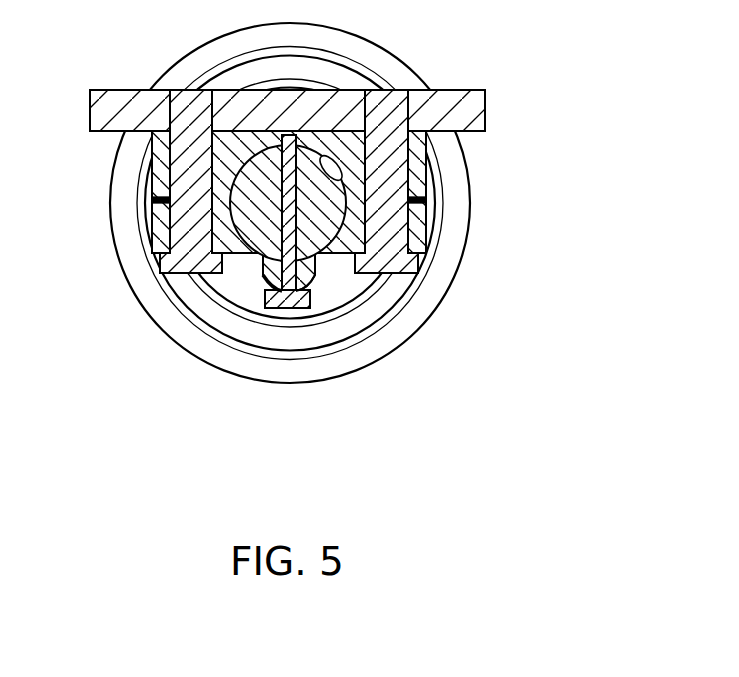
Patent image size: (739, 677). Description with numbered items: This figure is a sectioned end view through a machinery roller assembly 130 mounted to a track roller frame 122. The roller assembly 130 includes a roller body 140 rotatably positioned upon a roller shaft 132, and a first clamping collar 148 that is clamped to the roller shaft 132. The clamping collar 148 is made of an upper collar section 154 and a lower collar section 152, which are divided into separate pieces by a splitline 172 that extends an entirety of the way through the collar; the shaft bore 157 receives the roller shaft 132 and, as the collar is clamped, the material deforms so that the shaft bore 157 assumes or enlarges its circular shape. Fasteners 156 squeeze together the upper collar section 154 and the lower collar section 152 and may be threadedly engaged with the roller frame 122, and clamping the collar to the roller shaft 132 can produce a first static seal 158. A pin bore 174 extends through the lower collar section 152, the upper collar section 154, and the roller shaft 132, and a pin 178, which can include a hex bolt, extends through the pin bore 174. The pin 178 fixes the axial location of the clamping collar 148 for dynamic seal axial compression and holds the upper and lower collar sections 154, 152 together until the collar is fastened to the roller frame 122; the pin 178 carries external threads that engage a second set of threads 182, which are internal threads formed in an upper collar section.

The track roller frame 122 is at (487, 108).
The roller assembly 130 is at (536, 80).
The roller shaft 132 is at (297, 235).
The roller body 140 is at (405, 342).
The first clamping collar 148 is at (246, 257).
The lower collar section 152 is at (229, 306).
The upper collar section 154 is at (345, 148).
The fasteners 156 is at (185, 278).
The shaft bore 157 is at (343, 178).
The first static seal 158 is at (388, 90).
The splitline 172 is at (152, 193).
The pin bore 174 is at (280, 309).
The pin 178 is at (302, 213).
The second set of threads 182 is at (212, 91).